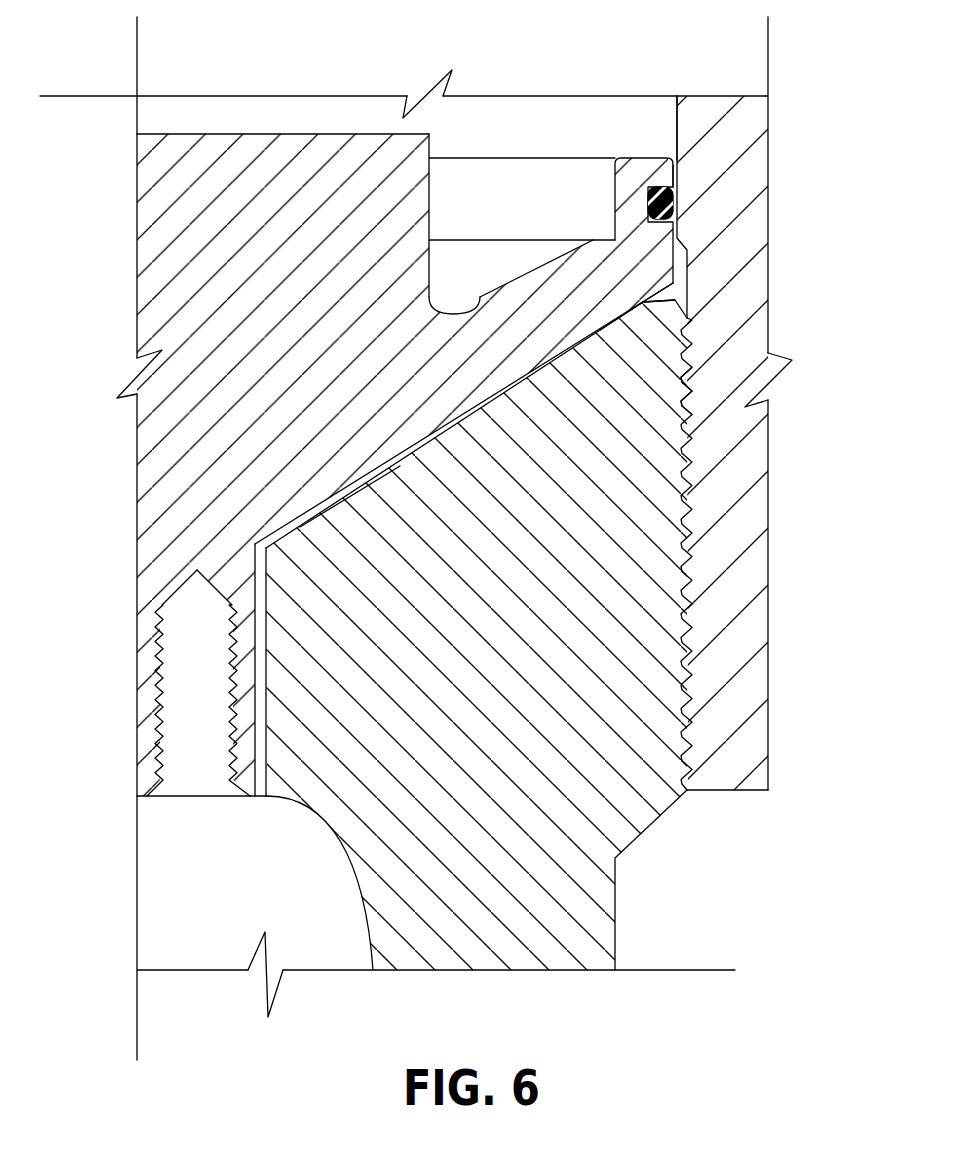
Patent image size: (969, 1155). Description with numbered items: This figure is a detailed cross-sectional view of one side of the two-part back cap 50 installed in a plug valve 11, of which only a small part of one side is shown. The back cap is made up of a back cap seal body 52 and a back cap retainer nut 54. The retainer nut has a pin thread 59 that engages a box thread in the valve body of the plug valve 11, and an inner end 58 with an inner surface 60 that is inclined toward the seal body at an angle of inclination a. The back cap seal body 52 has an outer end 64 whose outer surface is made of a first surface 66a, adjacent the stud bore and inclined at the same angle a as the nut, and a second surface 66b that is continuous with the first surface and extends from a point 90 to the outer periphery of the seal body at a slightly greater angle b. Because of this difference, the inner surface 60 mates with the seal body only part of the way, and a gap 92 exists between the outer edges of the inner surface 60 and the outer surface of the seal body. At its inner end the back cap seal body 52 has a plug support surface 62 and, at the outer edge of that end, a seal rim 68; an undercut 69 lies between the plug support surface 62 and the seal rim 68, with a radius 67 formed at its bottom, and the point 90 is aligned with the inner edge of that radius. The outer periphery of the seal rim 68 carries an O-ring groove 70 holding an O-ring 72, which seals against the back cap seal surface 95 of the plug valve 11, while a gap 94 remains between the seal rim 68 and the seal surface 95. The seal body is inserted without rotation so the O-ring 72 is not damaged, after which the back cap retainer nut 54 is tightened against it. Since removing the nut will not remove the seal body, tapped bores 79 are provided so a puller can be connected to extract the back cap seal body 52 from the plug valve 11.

The plug valve 11 is at (728, 762).
The two-part back cap 50 is at (262, 873).
The back cap seal body 52 is at (277, 355).
The back cap retainer nut 54 is at (492, 675).
The inner end 58 is at (585, 357).
The pin thread 59 is at (687, 705).
The inner surface 60 is at (692, 352).
The plug support surface 62 is at (297, 134).
The outer end 64 is at (556, 358).
The first surface 66a is at (385, 503).
The second surface 66b is at (627, 325).
The radius 67 is at (455, 313).
The seal rim 68 is at (638, 173).
The undercut 69 is at (547, 262).
The O-ring groove 70 is at (671, 160).
The O-ring 72 is at (672, 200).
The tapped bores 79 is at (192, 742).
The point 90 is at (435, 448).
The gap 92 is at (645, 302).
The gap 94 is at (672, 163).
The back cap seal surface 95 is at (677, 118).